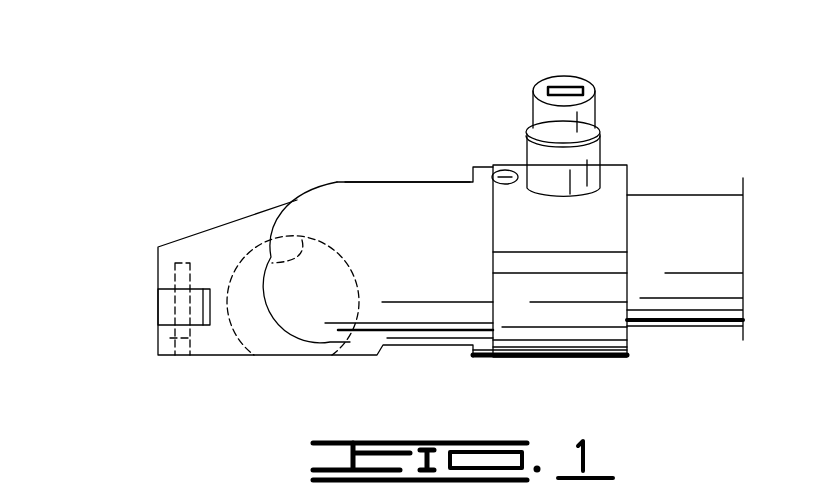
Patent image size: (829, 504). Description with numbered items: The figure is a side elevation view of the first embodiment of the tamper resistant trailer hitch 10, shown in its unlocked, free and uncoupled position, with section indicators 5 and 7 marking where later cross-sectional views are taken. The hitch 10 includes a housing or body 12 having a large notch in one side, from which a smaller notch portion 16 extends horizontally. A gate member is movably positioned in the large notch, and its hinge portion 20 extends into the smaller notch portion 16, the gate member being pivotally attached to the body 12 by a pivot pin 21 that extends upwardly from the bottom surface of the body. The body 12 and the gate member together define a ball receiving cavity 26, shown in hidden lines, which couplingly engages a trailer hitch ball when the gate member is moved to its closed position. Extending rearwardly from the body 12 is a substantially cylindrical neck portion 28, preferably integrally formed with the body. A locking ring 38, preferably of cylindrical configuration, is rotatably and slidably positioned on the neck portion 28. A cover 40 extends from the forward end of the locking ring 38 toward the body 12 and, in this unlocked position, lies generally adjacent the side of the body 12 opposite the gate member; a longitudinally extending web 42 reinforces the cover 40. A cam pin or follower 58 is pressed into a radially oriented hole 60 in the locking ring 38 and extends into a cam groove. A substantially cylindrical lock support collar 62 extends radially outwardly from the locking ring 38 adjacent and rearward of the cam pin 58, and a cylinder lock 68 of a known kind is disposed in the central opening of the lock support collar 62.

The section line 5- 5 is at (545, 413).
The section line 7- 7 is at (607, 387).
The hitch 10 is at (423, 103).
The body 12 is at (207, 237).
The smaller notch portion 16 is at (177, 299).
The hinge portion 20 is at (170, 313).
The pivot pin 21 is at (170, 338).
The ball receiving cavity 26 is at (262, 240).
The neck portion 28 is at (405, 180).
The locking ring 38 is at (608, 217).
The cover 40 is at (353, 228).
The web 42 is at (620, 262).
The cam pin 58 is at (513, 168).
The radially oriented hole 60 is at (500, 175).
The lock support collar 62 is at (598, 157).
The cylinder lock 68 is at (596, 113).